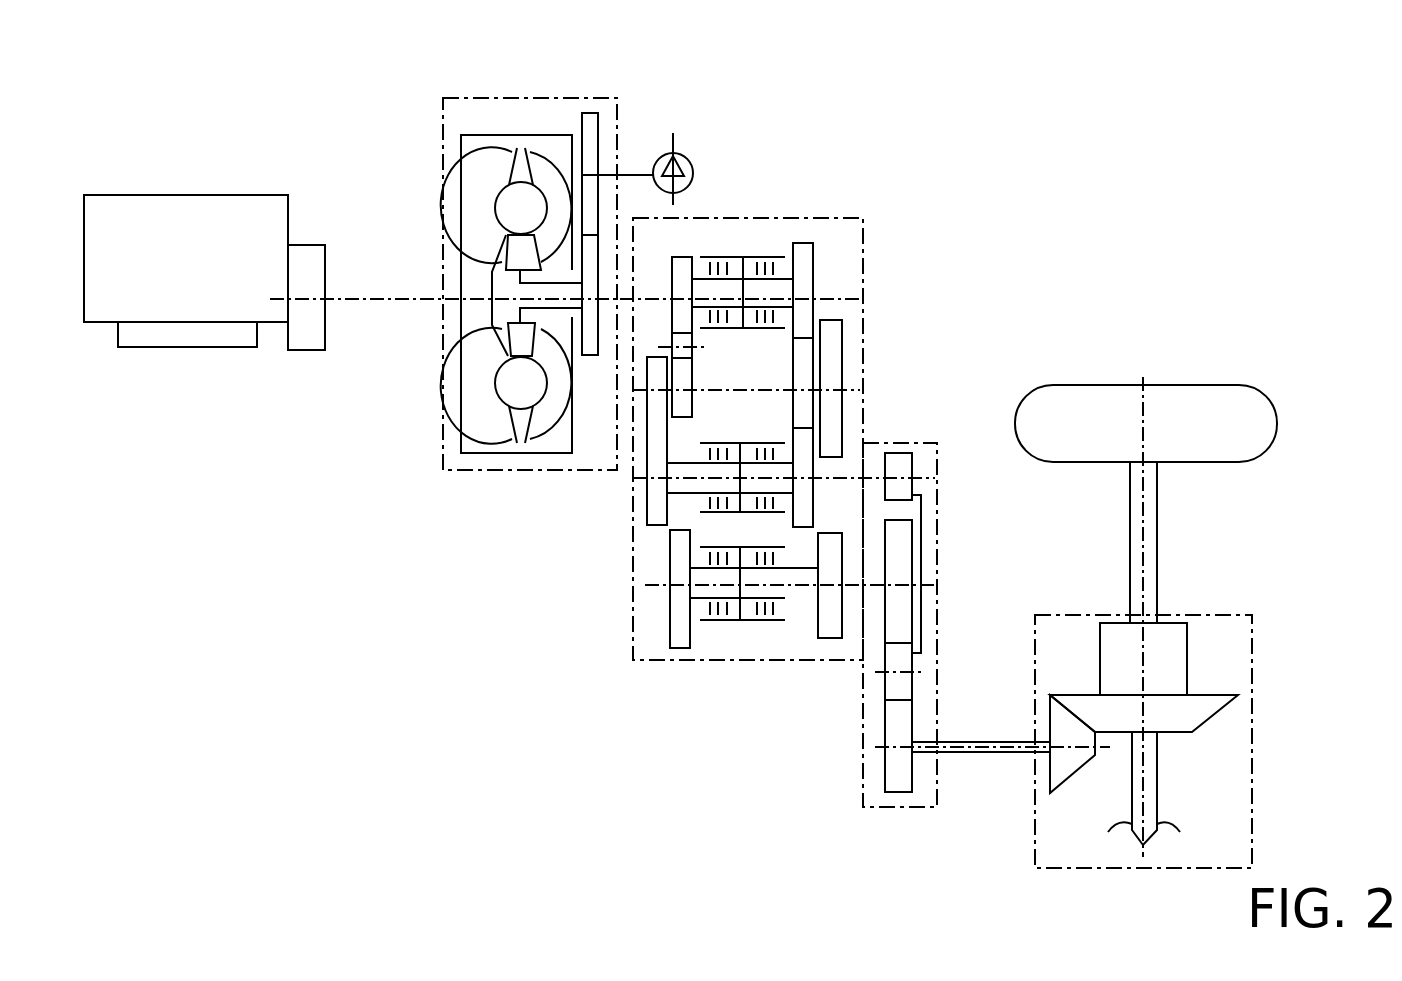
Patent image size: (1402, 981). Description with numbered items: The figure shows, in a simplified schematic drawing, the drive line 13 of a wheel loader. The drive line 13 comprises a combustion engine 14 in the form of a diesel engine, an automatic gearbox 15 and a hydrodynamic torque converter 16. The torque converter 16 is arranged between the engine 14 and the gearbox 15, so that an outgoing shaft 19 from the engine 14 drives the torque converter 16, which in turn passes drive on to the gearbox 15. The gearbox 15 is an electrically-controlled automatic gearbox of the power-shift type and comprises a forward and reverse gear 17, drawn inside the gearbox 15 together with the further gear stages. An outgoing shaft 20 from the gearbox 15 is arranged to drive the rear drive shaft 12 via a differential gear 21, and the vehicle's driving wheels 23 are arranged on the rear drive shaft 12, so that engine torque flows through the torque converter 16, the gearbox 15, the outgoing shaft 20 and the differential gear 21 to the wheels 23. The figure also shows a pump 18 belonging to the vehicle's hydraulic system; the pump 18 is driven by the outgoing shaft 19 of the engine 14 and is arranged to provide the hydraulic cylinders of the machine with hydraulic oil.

The rear drive shaft 12 is at (1150, 567).
The drive line 13 is at (940, 140).
The combustion engine 14 is at (153, 198).
The automatic gearbox 15 is at (878, 262).
The hydrodynamic torque converter 16 is at (543, 80).
The forward and reverse gear 17 is at (782, 208).
The pump 18 is at (693, 168).
The outgoing shaft 19 is at (393, 297).
The outgoing shaft 20 is at (990, 755).
The differential gear 21 is at (1257, 710).
The driving wheels 23 is at (1165, 397).